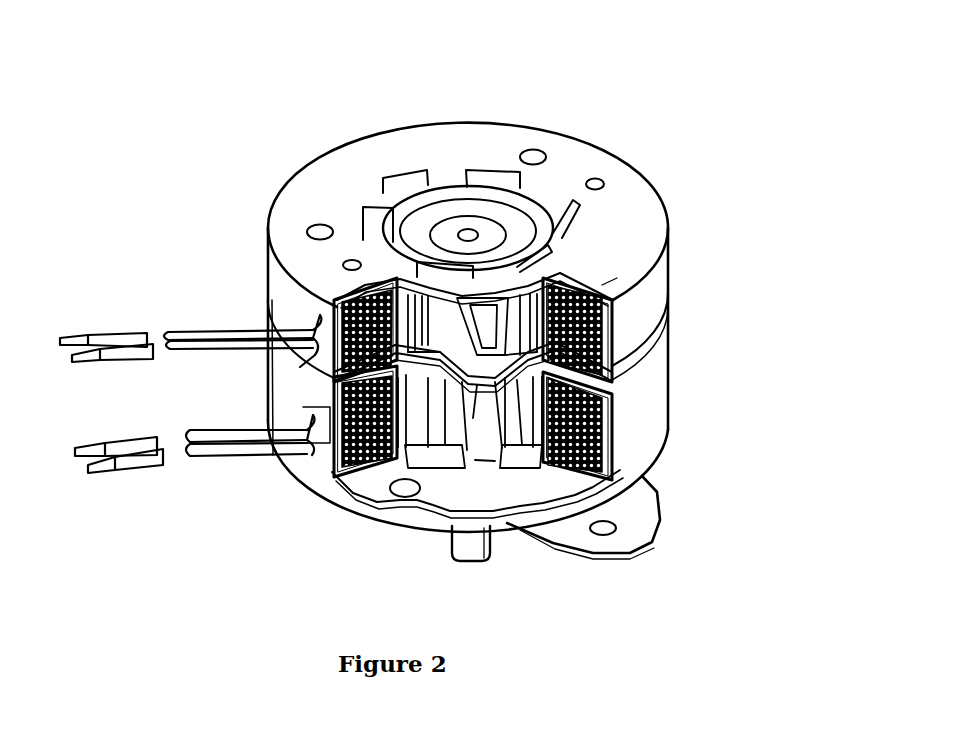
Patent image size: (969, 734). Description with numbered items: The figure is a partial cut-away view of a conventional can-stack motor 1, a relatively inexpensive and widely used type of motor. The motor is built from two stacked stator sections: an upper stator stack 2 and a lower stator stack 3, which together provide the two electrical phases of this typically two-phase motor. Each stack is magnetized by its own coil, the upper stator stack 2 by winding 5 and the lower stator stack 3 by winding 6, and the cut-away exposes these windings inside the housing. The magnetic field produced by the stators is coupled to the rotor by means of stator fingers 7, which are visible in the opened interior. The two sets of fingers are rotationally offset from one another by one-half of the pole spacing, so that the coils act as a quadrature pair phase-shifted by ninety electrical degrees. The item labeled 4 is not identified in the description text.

The can-stack motor 1 is at (330, 156).
The upper stator stack 2 is at (672, 265).
The lower stator stack 3 is at (675, 421).
The rotor shaft 4 is at (442, 547).
The winding 5 is at (337, 303).
The winding 6 is at (557, 470).
The stator fingers 7 is at (479, 417).